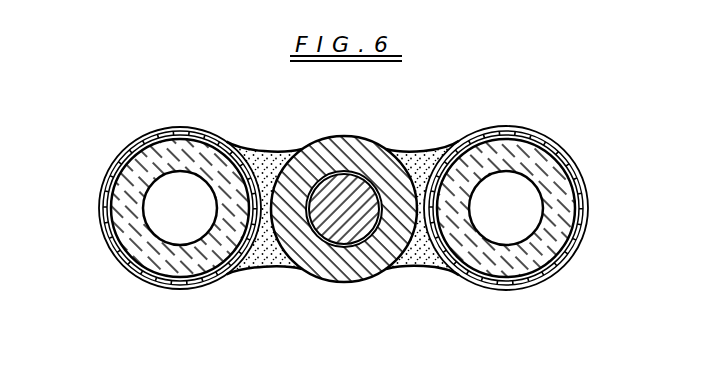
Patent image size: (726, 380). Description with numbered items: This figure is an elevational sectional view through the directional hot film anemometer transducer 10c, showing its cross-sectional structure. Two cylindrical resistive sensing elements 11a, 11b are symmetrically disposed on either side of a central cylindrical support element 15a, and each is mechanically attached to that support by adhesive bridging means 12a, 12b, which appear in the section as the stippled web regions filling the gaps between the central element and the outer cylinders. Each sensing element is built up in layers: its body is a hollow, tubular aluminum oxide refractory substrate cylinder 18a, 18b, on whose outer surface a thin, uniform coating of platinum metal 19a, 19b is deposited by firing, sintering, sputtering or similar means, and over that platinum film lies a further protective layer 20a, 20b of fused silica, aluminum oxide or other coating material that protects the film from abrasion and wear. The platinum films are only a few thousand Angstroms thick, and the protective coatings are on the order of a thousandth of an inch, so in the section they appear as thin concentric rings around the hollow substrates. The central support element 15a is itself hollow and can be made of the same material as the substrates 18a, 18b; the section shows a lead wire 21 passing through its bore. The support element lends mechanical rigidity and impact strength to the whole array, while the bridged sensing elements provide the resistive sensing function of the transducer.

The directional hot film anemometer transducer 10c is at (327, 291).
The first cylindrical sensing element 11a is at (149, 207).
The second cylindrical sensing element 11b is at (541, 202).
The first adhesive bridging means 12a is at (272, 150).
The second adhesive bridging means 12b is at (425, 155).
The central support element 15a is at (332, 130).
The first refractory substrate cylinder 18a is at (127, 205).
The second refractory substrate cylinder 18b is at (571, 222).
The first platinum film 19a is at (139, 151).
The second platinum film 19b is at (574, 164).
The first protective coating 20a is at (181, 127).
The second protective coating 20b is at (541, 131).
The lead wire 21 is at (352, 183).